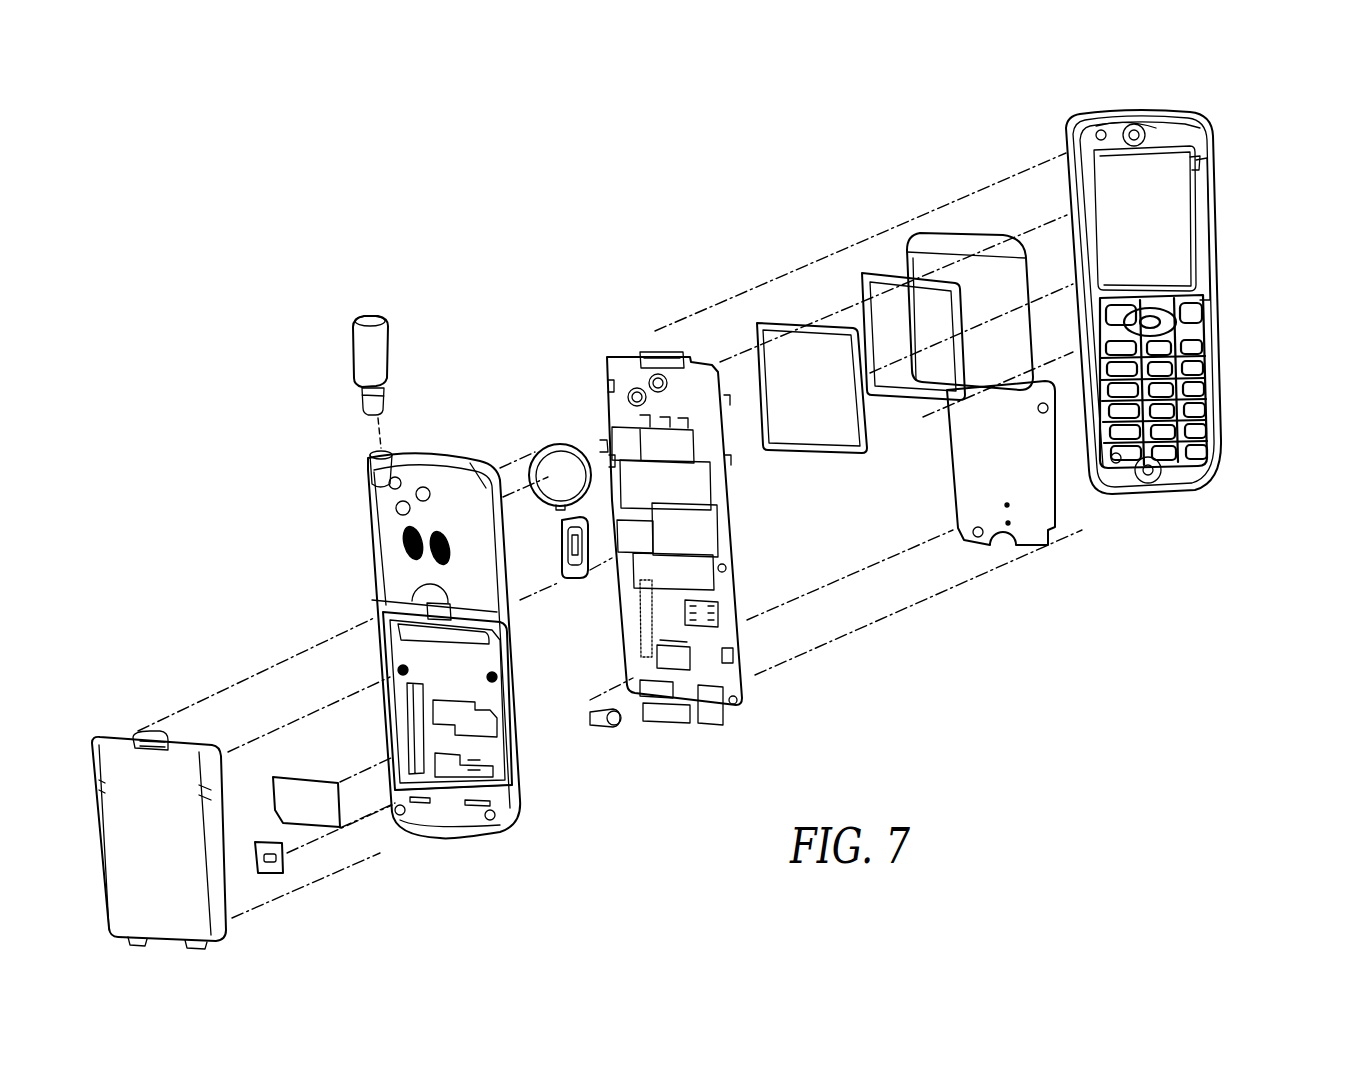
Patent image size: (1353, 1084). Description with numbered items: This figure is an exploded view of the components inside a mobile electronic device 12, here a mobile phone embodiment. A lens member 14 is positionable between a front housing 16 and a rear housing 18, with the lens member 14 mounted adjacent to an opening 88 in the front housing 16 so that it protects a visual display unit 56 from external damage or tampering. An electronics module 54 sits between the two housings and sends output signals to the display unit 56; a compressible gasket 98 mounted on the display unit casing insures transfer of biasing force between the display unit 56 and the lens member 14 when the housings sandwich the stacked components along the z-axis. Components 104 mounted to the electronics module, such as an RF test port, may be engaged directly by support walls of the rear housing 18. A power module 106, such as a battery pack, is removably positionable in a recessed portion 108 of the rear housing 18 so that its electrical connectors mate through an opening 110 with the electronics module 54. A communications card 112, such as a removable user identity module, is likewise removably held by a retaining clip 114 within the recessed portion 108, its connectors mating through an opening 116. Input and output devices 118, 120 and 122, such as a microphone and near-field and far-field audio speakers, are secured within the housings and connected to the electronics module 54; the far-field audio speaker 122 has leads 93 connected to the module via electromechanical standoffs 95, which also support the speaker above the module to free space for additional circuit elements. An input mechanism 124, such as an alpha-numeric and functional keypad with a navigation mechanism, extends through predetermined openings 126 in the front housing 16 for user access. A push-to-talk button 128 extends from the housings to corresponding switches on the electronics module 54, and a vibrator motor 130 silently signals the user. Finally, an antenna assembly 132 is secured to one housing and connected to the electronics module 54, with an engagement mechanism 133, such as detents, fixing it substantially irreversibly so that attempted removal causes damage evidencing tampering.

The mobile electronic device 12 is at (372, 230).
The lens member 14 is at (960, 232).
The front housing 16 is at (1068, 127).
The rear housing 18 is at (403, 540).
The electronics module 54 is at (655, 352).
The visual display unit 56 is at (800, 325).
The opening 88 is at (1168, 185).
The leads 93 is at (590, 457).
The electromechanical standoffs 95 is at (723, 433).
The compressible gasket 98 is at (890, 272).
The components 104 is at (633, 370).
The power module 106 is at (117, 742).
The recessed portion 108 is at (398, 650).
The opening 110 is at (448, 767).
The communications card 112 is at (280, 787).
The retaining clip 114 is at (282, 870).
The opening 116 is at (492, 712).
The input and/or output device 118 is at (1150, 483).
The input and/or output device 120 is at (1125, 110).
The far-field audio speaker 122 is at (557, 457).
The input mechanism 124 is at (1075, 530).
The predetermined openings 126 is at (1243, 378).
The push-to-talk button 128 is at (580, 580).
The vibrator motor 130 is at (620, 717).
The antenna assembly 132 is at (380, 356).
The engagement mechanism 133 is at (385, 407).